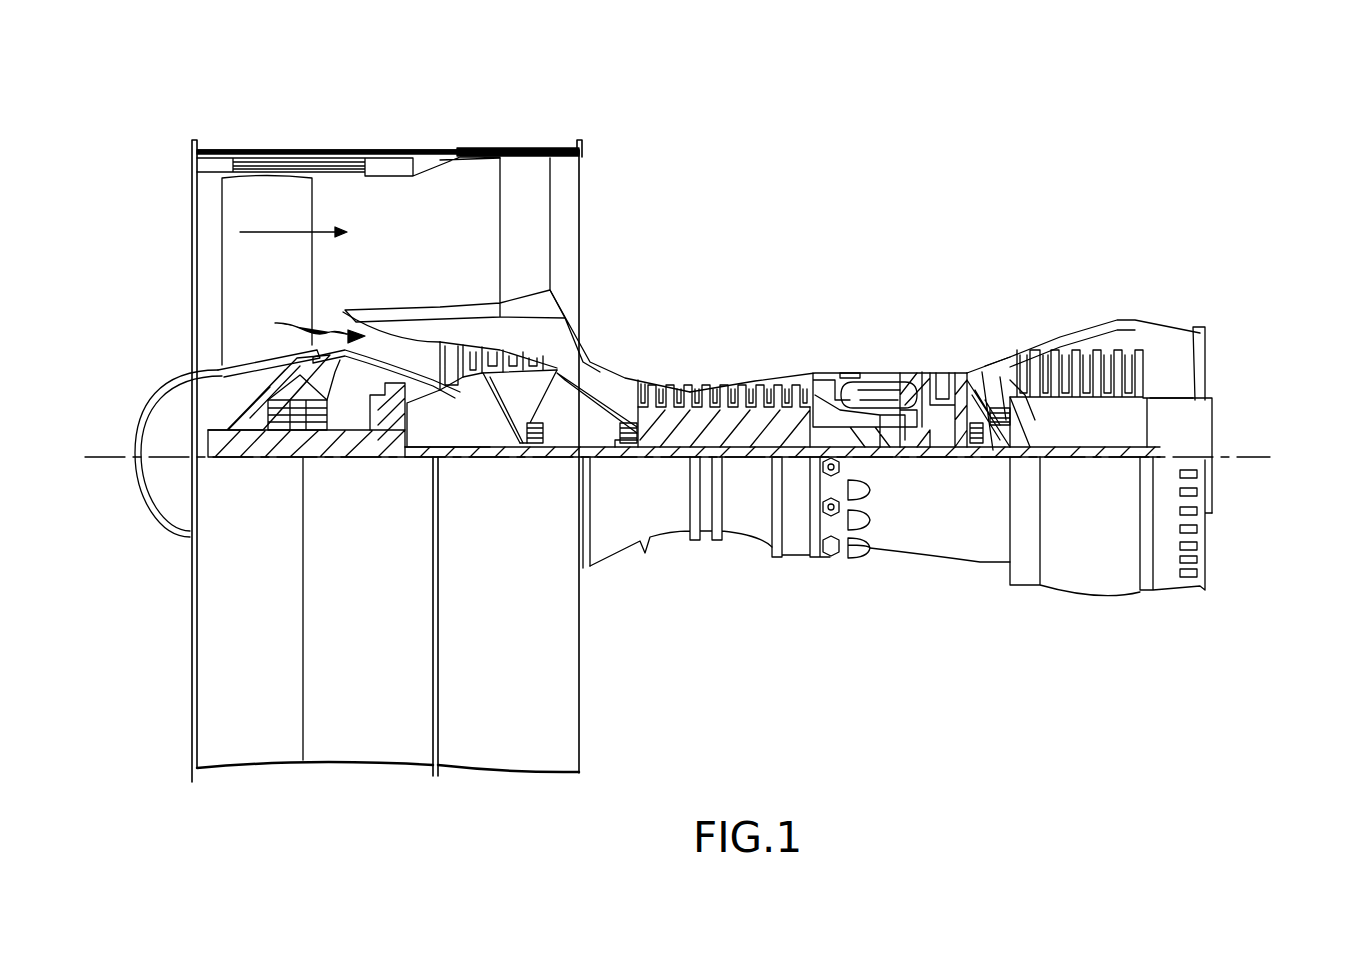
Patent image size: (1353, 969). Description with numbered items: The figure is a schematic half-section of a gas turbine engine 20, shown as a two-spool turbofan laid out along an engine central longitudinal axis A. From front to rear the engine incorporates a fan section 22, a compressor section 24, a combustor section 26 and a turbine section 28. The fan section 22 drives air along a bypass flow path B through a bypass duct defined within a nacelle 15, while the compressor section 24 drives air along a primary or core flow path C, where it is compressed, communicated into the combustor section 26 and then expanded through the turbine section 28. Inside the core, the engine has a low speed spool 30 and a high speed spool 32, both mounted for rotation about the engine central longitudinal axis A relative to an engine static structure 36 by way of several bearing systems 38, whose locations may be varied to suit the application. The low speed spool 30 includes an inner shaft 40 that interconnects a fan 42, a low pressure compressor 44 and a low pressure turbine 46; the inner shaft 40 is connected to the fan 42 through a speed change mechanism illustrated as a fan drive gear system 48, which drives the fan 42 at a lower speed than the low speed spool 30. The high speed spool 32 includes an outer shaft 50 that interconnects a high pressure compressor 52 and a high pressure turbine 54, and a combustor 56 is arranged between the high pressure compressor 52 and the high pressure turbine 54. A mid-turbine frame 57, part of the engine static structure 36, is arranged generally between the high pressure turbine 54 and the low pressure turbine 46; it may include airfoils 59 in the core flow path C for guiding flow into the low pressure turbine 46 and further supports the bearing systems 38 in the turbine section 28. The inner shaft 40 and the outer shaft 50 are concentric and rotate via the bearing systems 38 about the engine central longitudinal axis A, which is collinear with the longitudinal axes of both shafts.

The nacelle 15 is at (387, 162).
The gas turbine engine 20 is at (898, 165).
The fan section 22 is at (302, 138).
The compressor section 24 is at (620, 356).
The combustor section 26 is at (866, 333).
The turbine section 28 is at (1026, 308).
The low speed spool 30 is at (745, 500).
The high speed spool 32 is at (803, 405).
The engine static structure 36 is at (797, 530).
The bearing systems 38 is at (537, 446).
The inner shaft 40 is at (601, 462).
The fan 42 is at (278, 272).
The low pressure compressor 44 is at (548, 357).
The low pressure turbine 46 is at (1078, 345).
The fan drive gear system 48 is at (393, 455).
The outer shaft 50 is at (872, 442).
The high pressure compressor 52 is at (742, 393).
The high pressure turbine 54 is at (950, 370).
The combustor 56 is at (890, 392).
The mid-turbine frame 57 is at (984, 350).
The airfoils 59 is at (992, 388).
The engine central longitudinal axis A is at (1263, 455).
The bypass flow path B is at (272, 231).
The core flow path C is at (311, 325).